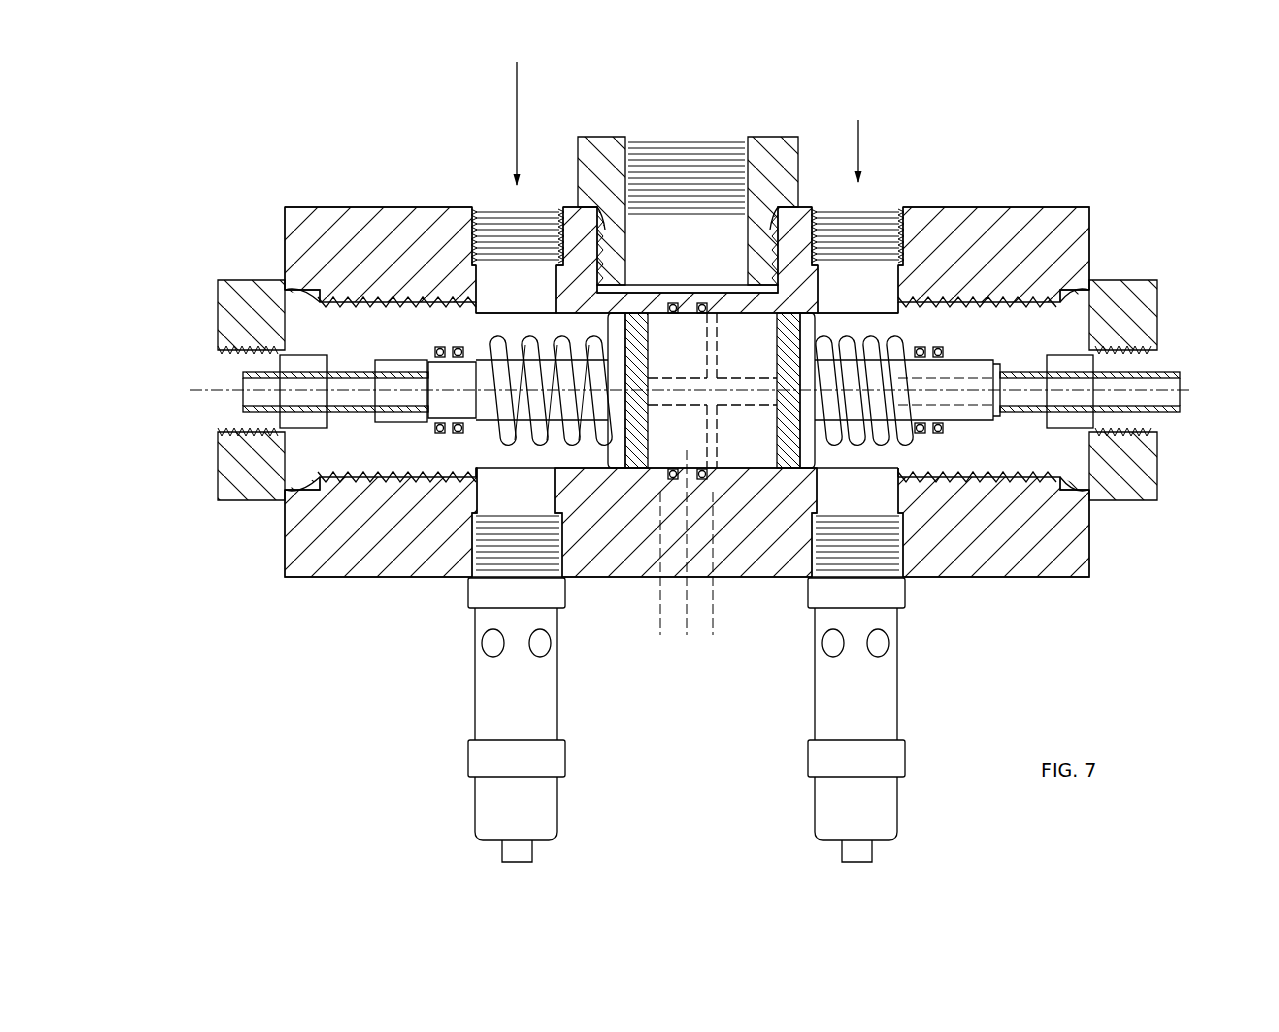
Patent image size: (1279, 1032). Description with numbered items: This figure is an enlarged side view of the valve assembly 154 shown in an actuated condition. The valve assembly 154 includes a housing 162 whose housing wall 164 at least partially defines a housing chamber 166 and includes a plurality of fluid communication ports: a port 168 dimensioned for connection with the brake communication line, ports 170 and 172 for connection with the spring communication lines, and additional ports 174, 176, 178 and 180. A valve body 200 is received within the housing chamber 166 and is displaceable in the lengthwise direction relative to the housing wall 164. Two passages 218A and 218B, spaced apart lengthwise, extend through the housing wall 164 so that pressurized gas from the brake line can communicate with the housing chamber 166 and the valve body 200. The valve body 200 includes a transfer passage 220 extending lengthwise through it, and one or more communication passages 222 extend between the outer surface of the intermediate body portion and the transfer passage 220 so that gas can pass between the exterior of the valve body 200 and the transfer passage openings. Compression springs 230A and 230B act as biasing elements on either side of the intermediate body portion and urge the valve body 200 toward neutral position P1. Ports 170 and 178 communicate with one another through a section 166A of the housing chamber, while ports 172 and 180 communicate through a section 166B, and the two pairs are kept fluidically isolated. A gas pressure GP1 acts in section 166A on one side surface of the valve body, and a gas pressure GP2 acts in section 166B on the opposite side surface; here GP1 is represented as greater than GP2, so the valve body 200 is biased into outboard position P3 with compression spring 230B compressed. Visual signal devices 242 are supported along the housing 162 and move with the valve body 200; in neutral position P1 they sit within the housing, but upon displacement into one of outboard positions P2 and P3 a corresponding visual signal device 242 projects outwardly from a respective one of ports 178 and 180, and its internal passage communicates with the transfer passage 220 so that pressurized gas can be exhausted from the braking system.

The valve assembly 154 is at (1115, 168).
The housing 162 is at (308, 205).
The housing wall 164 is at (330, 568).
The housing chamber 166 is at (400, 482).
The section of housing chamber 166A is at (545, 330).
The section of housing chamber 166B is at (887, 313).
The port 168 is at (699, 150).
The port 170 is at (496, 213).
The port 172 is at (858, 220).
The port 174 is at (245, 338).
The port 176 is at (1152, 346).
The port 178 is at (468, 560).
The port 180 is at (905, 556).
The valve body 200 is at (768, 314).
The passage 218A is at (658, 310).
The passage 218B is at (722, 310).
The transfer passage 220 is at (952, 377).
The communication passage 222 is at (717, 332).
The compression spring 230A is at (492, 328).
The compression spring 230B is at (860, 452).
The visual signal device 242 is at (292, 368).
The gas pressure GP1 is at (516, 140).
The gas pressure GP2 is at (859, 140).
The neutral position P1 is at (686, 636).
The outboard position P2 is at (655, 636).
The outboard position P3 is at (716, 636).